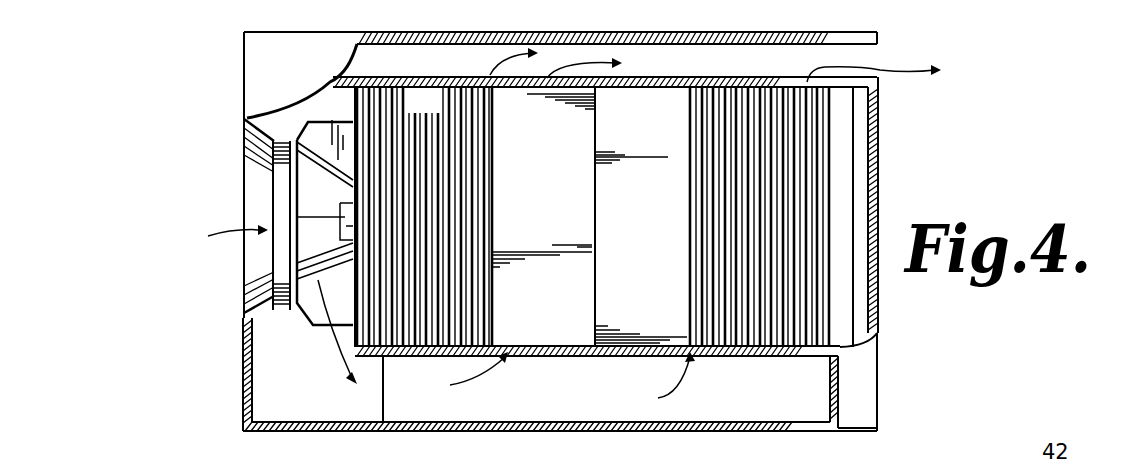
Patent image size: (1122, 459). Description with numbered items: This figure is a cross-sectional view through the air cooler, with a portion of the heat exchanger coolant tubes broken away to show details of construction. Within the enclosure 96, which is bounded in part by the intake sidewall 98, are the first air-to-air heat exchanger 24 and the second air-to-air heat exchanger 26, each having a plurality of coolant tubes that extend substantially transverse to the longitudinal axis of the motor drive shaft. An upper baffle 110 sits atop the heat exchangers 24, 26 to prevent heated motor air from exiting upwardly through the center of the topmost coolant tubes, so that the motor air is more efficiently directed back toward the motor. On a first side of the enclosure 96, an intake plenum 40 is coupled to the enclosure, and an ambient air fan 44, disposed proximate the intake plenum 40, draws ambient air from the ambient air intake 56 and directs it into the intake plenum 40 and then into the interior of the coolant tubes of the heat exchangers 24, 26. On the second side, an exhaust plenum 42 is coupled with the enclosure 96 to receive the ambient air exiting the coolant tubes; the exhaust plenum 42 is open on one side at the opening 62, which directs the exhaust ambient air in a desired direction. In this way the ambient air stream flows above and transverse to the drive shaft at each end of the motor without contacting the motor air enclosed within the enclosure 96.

The first air-to-air heat exchanger 24 is at (392, 113).
The second air-to-air heat exchanger 26 is at (786, 92).
The intake plenum 40 is at (440, 430).
The exhaust plenum 42 is at (687, 48).
The ambient air fan 44 is at (282, 176).
The ambient air intake 56 is at (252, 283).
The opening 62 is at (873, 58).
The enclosure 96 is at (877, 175).
The intake sidewall 98 is at (773, 357).
The upper baffle 110 is at (618, 352).